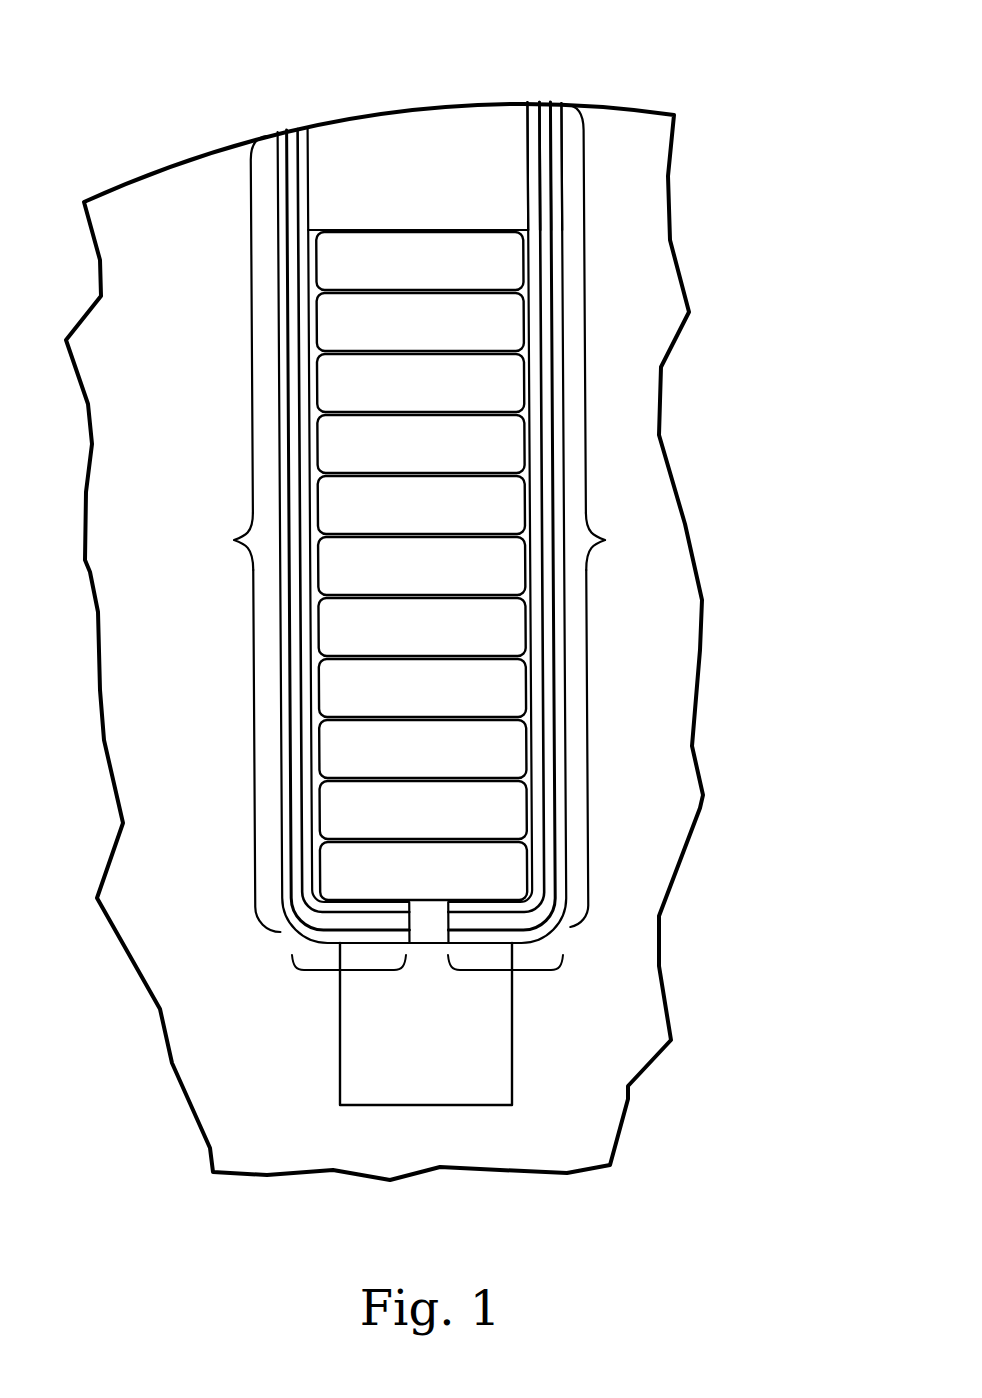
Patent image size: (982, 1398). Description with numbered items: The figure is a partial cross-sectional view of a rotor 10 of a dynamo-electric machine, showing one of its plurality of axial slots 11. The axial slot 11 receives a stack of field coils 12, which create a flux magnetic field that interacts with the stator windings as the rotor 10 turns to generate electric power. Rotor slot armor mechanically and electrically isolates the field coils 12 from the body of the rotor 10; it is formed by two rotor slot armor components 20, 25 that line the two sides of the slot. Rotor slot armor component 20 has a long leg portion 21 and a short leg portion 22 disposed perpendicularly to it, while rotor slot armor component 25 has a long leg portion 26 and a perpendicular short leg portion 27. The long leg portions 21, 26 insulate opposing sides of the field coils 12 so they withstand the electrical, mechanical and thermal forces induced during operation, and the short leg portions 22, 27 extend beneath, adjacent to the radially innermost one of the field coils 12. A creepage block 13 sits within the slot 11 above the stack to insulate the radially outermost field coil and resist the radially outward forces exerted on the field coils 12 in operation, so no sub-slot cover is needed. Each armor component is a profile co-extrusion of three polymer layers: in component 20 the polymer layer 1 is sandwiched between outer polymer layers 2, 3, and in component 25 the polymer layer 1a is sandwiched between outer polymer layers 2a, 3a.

The polymer layer 1 is at (293, 131).
The outer polymer layer 2 is at (302, 130).
The outer polymer layer 3 is at (282, 133).
The polymer layer 1a is at (543, 101).
The outer polymer layer 2a is at (530, 103).
The outer polymer layer 3a is at (557, 107).
The rotor 10 is at (748, 702).
The axial slot 11 is at (412, 1047).
The field coils 12 is at (340, 770).
The creepage block 13 is at (512, 175).
The rotor slot armor component 20 is at (266, 449).
The long leg portion 21 is at (225, 541).
The short leg portion 22 is at (348, 972).
The rotor slot armor component 25 is at (592, 656).
The long leg portion 26 is at (614, 541).
The short leg portion 27 is at (497, 972).